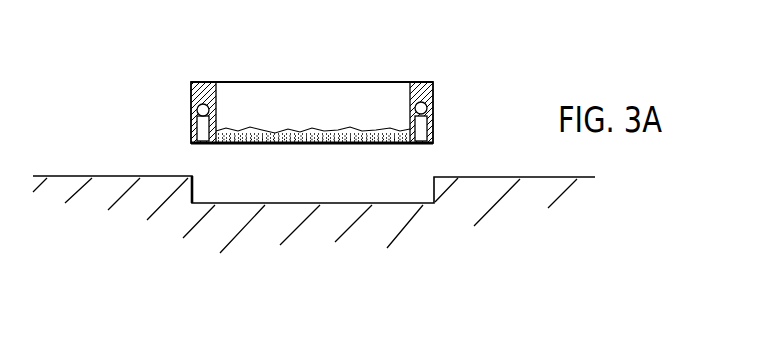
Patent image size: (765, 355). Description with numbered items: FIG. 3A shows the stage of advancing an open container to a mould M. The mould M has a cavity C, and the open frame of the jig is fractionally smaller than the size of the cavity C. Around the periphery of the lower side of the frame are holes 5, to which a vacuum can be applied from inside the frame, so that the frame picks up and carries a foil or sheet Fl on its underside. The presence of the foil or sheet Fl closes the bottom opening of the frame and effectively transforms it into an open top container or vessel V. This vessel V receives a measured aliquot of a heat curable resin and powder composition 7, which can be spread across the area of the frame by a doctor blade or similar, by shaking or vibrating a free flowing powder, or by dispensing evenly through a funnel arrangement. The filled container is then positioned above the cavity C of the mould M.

The heat curable resin and powder composition 7 is at (333, 95).
The holes 5 is at (429, 112).
The open top container or vessel V is at (290, 98).
The foil or sheet Fl is at (319, 145).
The cavity C is at (237, 188).
The mould M is at (152, 237).